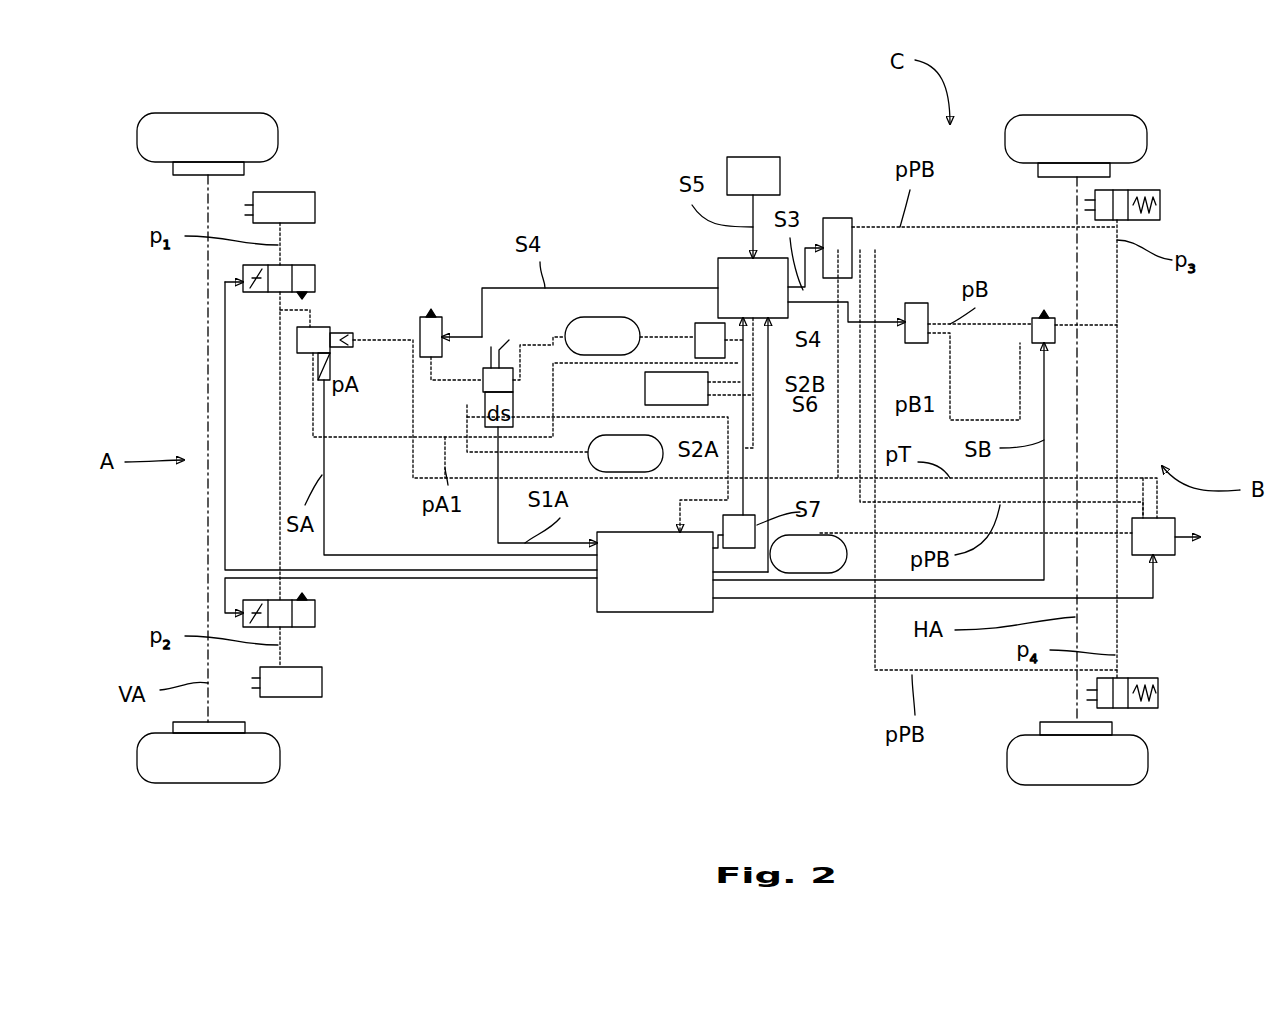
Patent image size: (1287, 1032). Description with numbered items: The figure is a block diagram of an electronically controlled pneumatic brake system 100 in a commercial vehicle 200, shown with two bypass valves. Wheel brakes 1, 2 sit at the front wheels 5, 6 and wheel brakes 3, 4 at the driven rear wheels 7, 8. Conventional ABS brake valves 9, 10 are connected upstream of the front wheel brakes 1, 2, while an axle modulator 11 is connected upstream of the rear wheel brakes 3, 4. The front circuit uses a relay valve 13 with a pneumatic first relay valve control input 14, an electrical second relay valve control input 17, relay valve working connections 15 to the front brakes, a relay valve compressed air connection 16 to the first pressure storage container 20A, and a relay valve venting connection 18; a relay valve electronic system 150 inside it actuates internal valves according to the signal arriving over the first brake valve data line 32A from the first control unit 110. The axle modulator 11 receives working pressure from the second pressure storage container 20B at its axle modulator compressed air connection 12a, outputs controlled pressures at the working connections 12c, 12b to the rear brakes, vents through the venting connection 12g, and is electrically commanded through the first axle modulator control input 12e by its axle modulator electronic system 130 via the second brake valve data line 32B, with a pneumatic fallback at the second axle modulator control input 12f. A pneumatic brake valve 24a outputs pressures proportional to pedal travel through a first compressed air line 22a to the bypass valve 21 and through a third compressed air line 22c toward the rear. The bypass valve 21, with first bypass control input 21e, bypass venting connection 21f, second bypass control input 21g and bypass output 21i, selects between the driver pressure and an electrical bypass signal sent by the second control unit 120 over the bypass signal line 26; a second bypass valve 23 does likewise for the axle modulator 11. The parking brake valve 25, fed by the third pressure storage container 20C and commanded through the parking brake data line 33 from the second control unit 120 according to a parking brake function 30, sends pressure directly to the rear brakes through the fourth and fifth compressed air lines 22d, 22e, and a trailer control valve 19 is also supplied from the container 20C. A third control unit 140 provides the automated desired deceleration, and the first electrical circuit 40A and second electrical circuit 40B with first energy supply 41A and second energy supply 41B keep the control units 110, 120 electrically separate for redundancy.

The wheel brake 1 is at (315, 207).
The wheel brake 2 is at (322, 683).
The wheel brake 3 is at (1160, 208).
The wheel brake 4 is at (1158, 693).
The wheel 5 is at (278, 137).
The wheel 6 is at (280, 757).
The wheel 7 is at (1147, 140).
The wheel 8 is at (1007, 760).
The ABS brake valve 9 is at (315, 280).
The ABS brake valve 10 is at (315, 613).
The axle modulator 11 is at (1052, 348).
The axle modulator compressed air connection 12a is at (1032, 336).
The second axle modulator working connection 12b is at (1057, 340).
The first axle modulator working connection 12c is at (1057, 328).
The first axle modulator control input 12e is at (1040, 346).
The second axle modulator control input 12f is at (1032, 322).
The axle modulator venting connection 12g is at (1045, 316).
The relay valve 13 is at (297, 342).
The first relay valve control input 14 is at (358, 342).
The relay valve working connection 15 is at (292, 322).
The relay valve compressed air connection 16 is at (313, 357).
The second relay valve control input 17 is at (326, 392).
The relay valve venting connection 18 is at (305, 357).
The trailer control valve 19 is at (1175, 552).
The first pressure storage container 20A is at (602, 336).
The second pressure storage container 20B is at (625, 453).
The third pressure storage container 20C is at (808, 554).
The bypass valve 21 is at (418, 328).
The first bypass control input 21e is at (447, 336).
The bypass venting connection 21f is at (421, 318).
The second bypass control input 21g is at (442, 360).
The bypass output 21i is at (380, 410).
The first compressed air line 22a is at (413, 440).
The third compressed air line 22c is at (652, 360).
The fourth compressed air line 22d is at (935, 227).
The fifth compressed air line 22e is at (875, 650).
The second bypass valve 23 is at (925, 303).
The pneumatic brake valve 24a is at (472, 540).
The parking brake valve 25 is at (855, 218).
The bypass signal line 26 is at (482, 290).
The parking brake function 30 is at (765, 157).
The first brake valve data line 32A is at (522, 580).
The second brake valve data line 32B is at (790, 598).
The parking brake data line 33 is at (805, 240).
The first electrical circuit 40A is at (622, 634).
The second electrical circuit 40B is at (704, 236).
The first energy supply 41A is at (740, 548).
The second energy supply 41B is at (690, 324).
The brake system 100 is at (512, 737).
The first control unit 110 is at (655, 612).
The second control unit 120 is at (718, 270).
The axle modulator electronic system 130 is at (1052, 320).
The third control unit 140 is at (645, 388).
The relay valve electronic system 150 is at (296, 333).
The commercial vehicle 200 is at (698, 146).